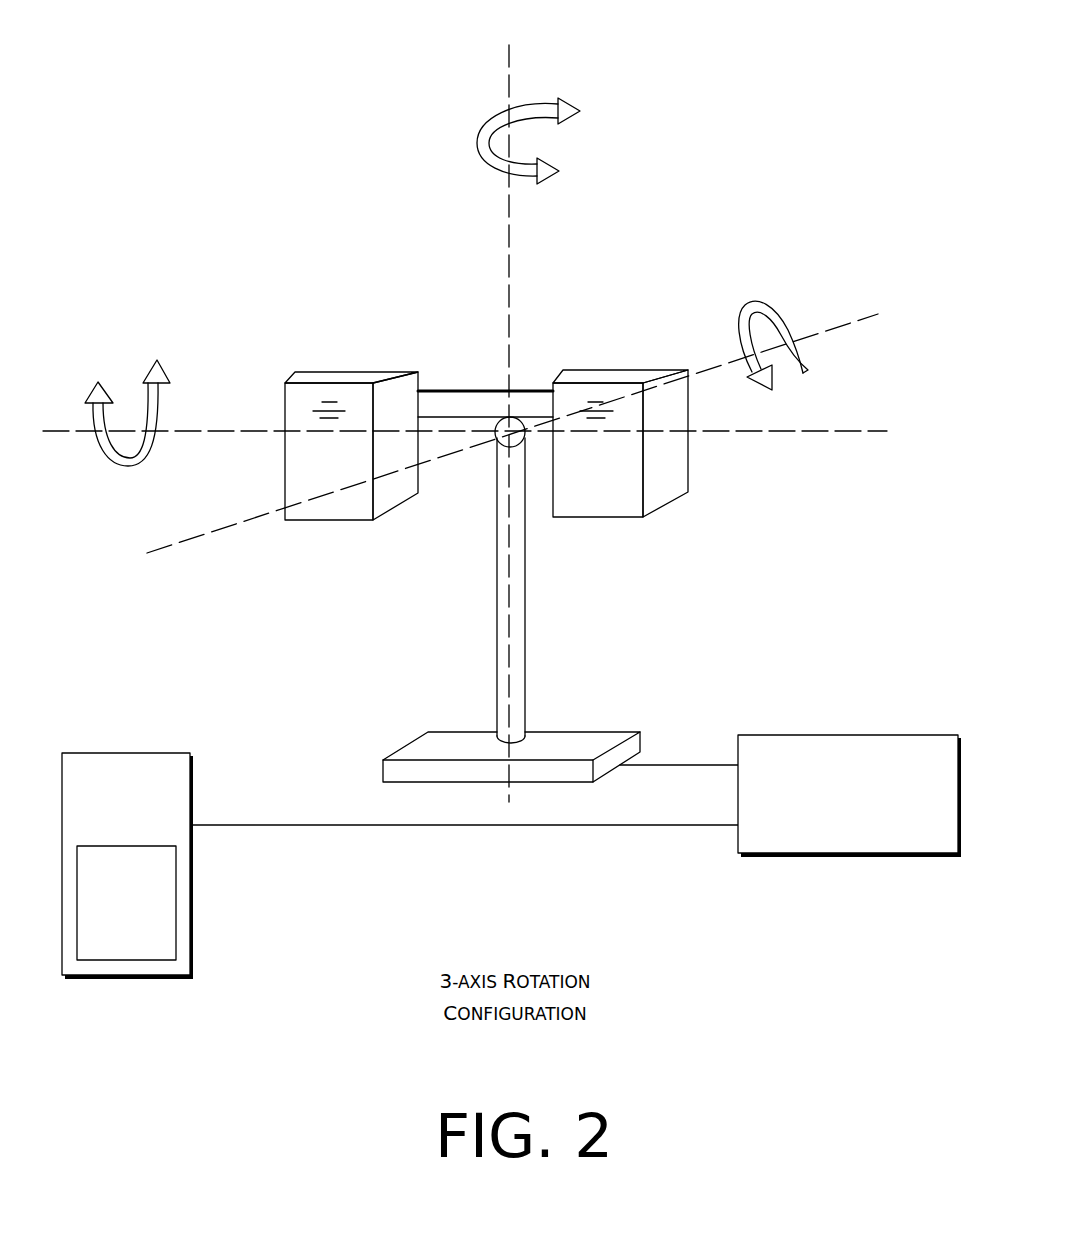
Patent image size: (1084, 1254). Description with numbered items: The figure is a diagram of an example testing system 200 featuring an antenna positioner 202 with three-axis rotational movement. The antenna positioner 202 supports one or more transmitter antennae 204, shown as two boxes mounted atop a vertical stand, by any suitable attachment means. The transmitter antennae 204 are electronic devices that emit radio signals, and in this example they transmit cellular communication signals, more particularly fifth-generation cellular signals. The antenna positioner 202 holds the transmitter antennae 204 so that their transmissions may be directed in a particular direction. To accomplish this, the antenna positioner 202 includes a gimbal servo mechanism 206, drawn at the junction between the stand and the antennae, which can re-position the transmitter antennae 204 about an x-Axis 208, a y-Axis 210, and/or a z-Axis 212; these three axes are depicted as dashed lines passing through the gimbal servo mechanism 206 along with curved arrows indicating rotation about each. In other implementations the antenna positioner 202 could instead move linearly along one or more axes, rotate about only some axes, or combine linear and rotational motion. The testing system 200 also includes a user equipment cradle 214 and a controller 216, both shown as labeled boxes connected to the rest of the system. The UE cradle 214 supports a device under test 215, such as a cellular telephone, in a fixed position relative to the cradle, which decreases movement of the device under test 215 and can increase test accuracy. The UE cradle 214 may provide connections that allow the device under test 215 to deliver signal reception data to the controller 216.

The testing system 200 is at (502, 512).
The antenna positioner 202 is at (510, 610).
The transmitter antennae 204 is at (567, 398).
The gimbal servo mechanism 206 is at (446, 523).
The x-Axis 208 is at (498, 430).
The y-Axis 210 is at (538, 459).
The z-Axis 212 is at (575, 423).
The UE cradle 214 is at (145, 838).
The device under test 215 is at (145, 950).
The controller 216 is at (830, 819).